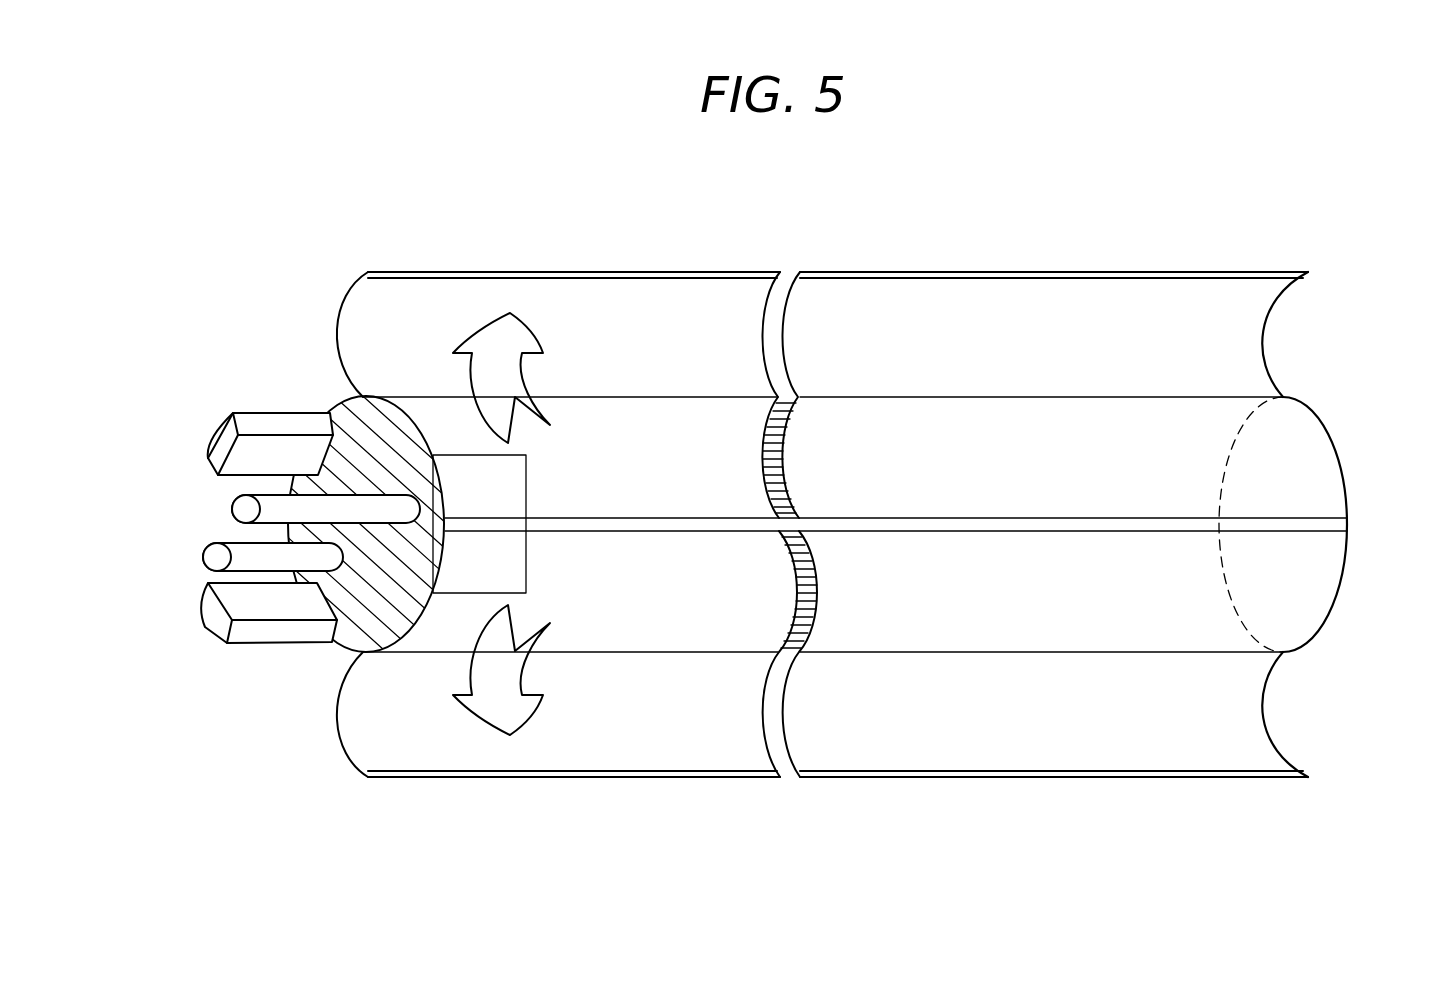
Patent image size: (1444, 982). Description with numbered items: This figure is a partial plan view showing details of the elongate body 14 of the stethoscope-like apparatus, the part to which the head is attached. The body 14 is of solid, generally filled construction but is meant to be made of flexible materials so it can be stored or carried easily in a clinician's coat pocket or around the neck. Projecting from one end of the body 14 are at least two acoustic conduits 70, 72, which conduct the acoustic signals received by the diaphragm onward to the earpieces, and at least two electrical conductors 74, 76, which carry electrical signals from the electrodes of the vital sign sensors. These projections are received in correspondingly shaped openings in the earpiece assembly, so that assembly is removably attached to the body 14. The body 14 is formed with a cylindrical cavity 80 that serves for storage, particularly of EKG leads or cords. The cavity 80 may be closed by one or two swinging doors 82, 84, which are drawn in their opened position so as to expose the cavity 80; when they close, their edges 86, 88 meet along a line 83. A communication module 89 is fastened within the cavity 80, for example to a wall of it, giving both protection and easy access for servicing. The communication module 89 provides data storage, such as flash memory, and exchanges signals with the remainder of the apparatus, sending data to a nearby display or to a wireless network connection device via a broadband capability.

The elongate body 14 is at (980, 792).
The acoustic conduit 70 is at (213, 427).
The acoustic conduit 72 is at (208, 630).
The electrical conductor 74 is at (230, 510).
The electrical conductor 76 is at (207, 559).
The cylindrical cavity 80 is at (1267, 630).
The swinging door 82 is at (1058, 307).
The line 83 is at (1287, 517).
The swinging door 84 is at (1300, 720).
The edge 86 is at (573, 272).
The edge 88 is at (537, 777).
The communication module 89 is at (527, 495).